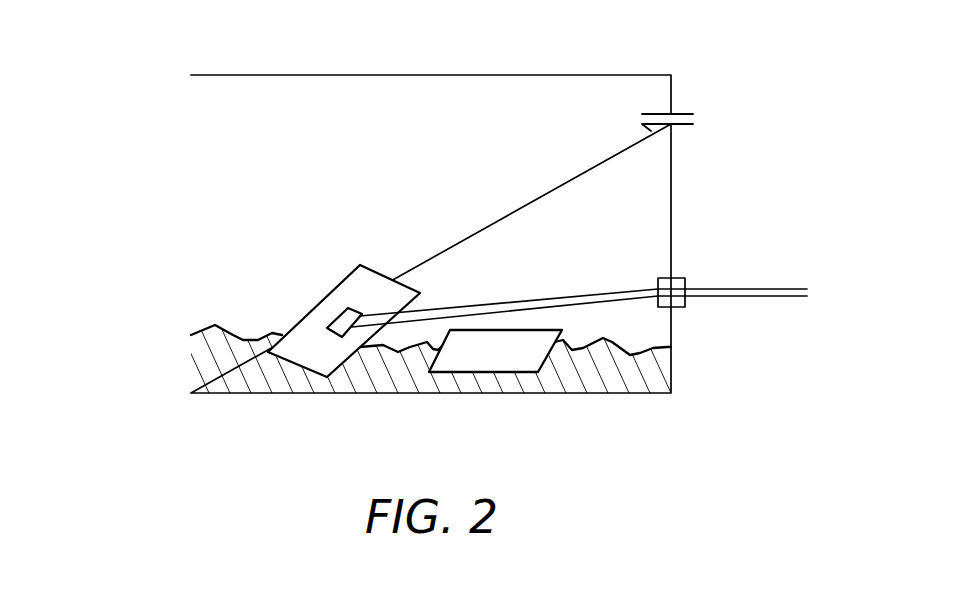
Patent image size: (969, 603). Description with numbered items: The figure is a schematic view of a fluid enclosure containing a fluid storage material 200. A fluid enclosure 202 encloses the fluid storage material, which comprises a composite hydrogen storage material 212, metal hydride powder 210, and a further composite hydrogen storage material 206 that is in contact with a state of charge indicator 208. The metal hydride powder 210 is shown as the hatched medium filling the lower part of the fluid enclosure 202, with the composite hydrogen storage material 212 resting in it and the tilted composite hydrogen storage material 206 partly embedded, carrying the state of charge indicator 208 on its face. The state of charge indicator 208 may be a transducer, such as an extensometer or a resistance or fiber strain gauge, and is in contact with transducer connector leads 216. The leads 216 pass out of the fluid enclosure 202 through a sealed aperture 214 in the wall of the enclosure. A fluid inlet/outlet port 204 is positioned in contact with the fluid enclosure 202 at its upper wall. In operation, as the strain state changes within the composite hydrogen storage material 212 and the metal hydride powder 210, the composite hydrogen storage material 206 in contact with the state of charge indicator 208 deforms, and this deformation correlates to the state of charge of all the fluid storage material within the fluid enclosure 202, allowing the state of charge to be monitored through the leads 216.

The fluid enclosure containing a fluid storage material 200 is at (138, 35).
The fluid enclosure 202 is at (648, 74).
The fluid inlet/outlet port 204 is at (690, 110).
The composite hydrogen storage material 206 is at (340, 283).
The state of charge indicator 208 is at (352, 308).
The metal hydride powder 210 is at (260, 386).
The composite hydrogen storage material 212 is at (485, 372).
The sealed aperture 214 is at (687, 308).
The transducer connector leads 216 is at (813, 270).